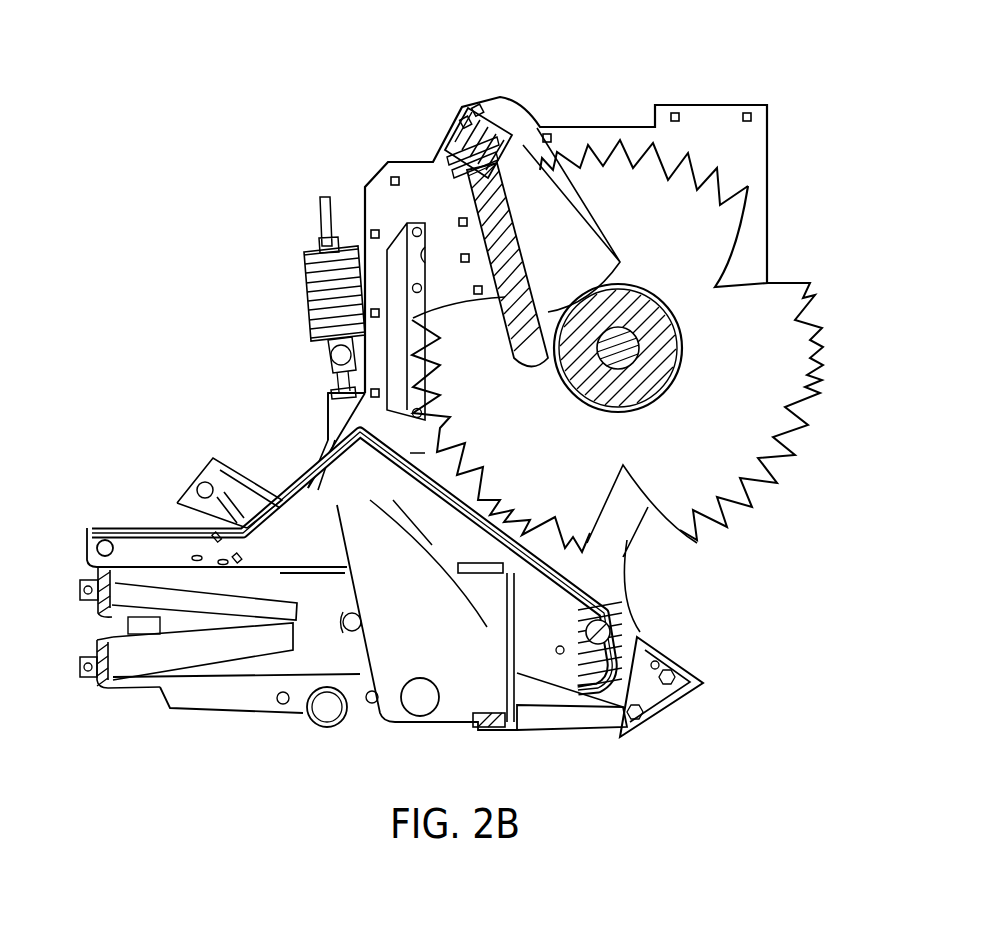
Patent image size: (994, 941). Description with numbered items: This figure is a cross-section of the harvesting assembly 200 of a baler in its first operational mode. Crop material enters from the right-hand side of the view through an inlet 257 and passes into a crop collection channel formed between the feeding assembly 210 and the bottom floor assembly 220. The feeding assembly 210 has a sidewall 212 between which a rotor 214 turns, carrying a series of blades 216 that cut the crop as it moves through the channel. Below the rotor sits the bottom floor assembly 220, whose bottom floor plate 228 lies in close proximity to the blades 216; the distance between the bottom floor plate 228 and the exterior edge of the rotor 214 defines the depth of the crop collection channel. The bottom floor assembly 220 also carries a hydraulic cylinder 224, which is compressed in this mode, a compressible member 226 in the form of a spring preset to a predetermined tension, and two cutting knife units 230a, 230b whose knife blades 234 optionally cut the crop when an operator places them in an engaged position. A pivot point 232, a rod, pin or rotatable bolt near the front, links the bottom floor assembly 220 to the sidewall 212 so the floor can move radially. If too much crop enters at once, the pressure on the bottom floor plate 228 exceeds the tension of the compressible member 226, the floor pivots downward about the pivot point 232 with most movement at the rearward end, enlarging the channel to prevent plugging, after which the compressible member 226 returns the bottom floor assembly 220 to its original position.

The harvesting assembly 200 is at (296, 150).
The feeding assembly 210 is at (766, 528).
The sidewall 212 is at (708, 118).
The rotor 214 is at (658, 298).
The blades 216 is at (758, 322).
The bottom floor assembly 220 is at (97, 631).
The hydraulic cylinder 224 is at (340, 417).
The compressible member 226 is at (318, 277).
The bottom floor plate 228 is at (613, 683).
The cutting knife unit 230a is at (130, 612).
The cutting knife unit 230b is at (137, 680).
The pivot point 232 is at (597, 630).
The knife blade 234 is at (492, 582).
The inlet 257 is at (645, 578).